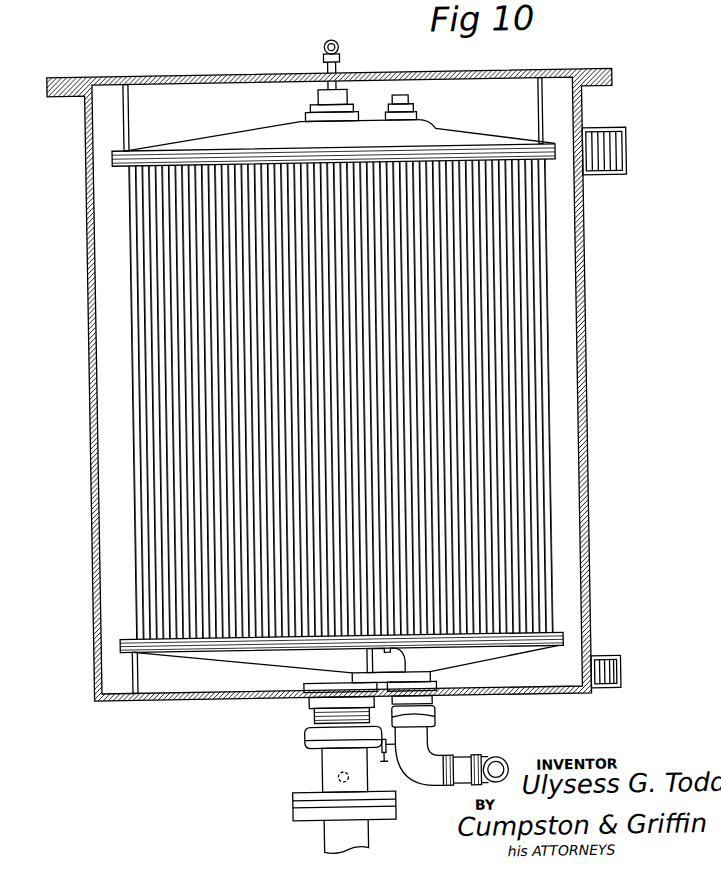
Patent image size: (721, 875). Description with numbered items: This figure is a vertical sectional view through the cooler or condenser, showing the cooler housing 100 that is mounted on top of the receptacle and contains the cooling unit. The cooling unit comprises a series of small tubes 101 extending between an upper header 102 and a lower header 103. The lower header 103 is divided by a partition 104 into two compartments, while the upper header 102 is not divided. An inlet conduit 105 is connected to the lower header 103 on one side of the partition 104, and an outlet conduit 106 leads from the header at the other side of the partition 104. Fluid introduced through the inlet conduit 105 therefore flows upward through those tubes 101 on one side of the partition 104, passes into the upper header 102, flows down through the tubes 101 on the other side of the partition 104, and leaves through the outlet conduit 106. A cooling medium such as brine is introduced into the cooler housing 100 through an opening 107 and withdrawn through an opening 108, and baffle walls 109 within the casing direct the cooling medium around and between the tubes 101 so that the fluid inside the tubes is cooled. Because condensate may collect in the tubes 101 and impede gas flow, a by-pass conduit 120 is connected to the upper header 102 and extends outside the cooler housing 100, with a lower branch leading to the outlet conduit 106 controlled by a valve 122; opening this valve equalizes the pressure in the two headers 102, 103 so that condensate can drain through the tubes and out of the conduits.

The cooler housing 100 is at (578, 328).
The tubes 101 is at (520, 447).
The upper header 102 is at (448, 137).
The lower header 103 is at (498, 656).
The partition 104 is at (358, 657).
The inlet conduit 105 is at (316, 757).
The outlet conduit 106 is at (424, 742).
The opening 107 is at (609, 661).
The opening 108 is at (620, 145).
The baffle walls 109 is at (140, 118).
The by-pass conduit 120 is at (345, 60).
The valve 122 is at (372, 753).